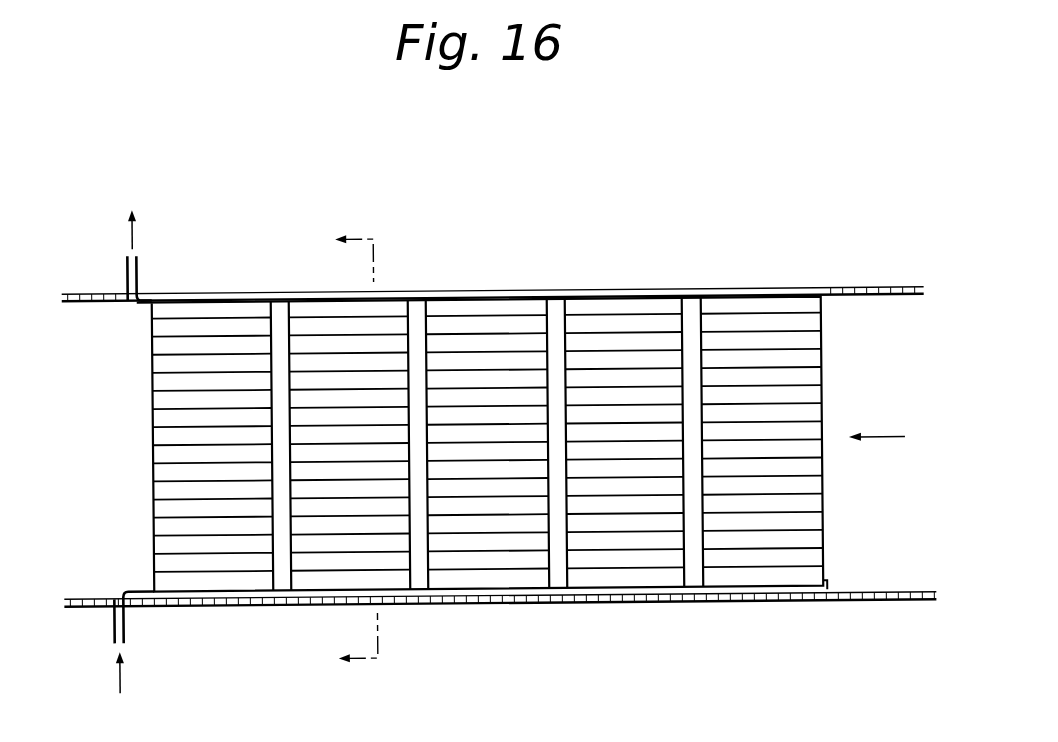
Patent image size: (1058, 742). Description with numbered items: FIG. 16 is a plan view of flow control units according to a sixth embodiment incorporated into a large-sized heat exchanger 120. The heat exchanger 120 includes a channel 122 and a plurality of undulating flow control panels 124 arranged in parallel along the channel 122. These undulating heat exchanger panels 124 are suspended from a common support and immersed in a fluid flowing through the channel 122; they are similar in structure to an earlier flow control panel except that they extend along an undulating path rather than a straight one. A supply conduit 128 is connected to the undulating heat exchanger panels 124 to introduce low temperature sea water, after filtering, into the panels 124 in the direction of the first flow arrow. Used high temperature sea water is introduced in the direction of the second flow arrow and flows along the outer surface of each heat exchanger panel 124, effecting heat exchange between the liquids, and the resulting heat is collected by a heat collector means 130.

The heat exchanger 120 is at (708, 197).
The channel 122 is at (858, 597).
The undulating flow control panels 124 is at (610, 326).
The supply conduit 128 is at (659, 604).
The heat collector means 130 is at (665, 293).